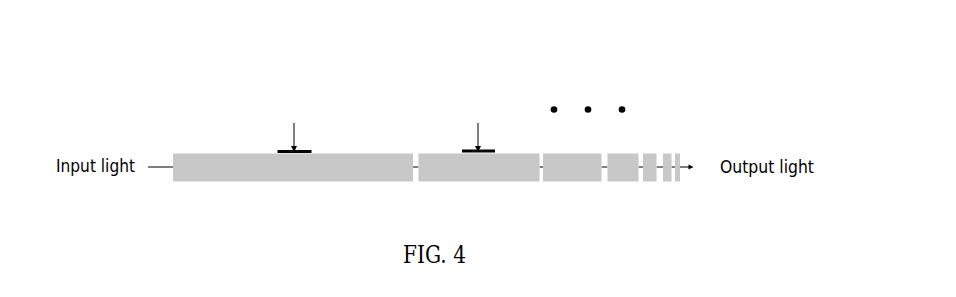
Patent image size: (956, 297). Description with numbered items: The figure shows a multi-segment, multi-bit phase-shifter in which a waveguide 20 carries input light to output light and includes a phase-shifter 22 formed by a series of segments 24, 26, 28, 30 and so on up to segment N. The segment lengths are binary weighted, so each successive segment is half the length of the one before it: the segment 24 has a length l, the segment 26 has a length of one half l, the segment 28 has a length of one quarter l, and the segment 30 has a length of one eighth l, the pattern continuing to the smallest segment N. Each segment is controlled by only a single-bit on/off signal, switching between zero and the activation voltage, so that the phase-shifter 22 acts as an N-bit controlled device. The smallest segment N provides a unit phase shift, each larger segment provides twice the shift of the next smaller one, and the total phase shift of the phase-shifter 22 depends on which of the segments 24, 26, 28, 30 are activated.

The waveguide 20 is at (153, 150).
The phase-shifter 22 is at (454, 82).
The segment 24 is at (230, 157).
The segment 26 is at (455, 158).
The segment 28 is at (593, 160).
The segment 30 is at (626, 162).
The segment N is at (677, 157).